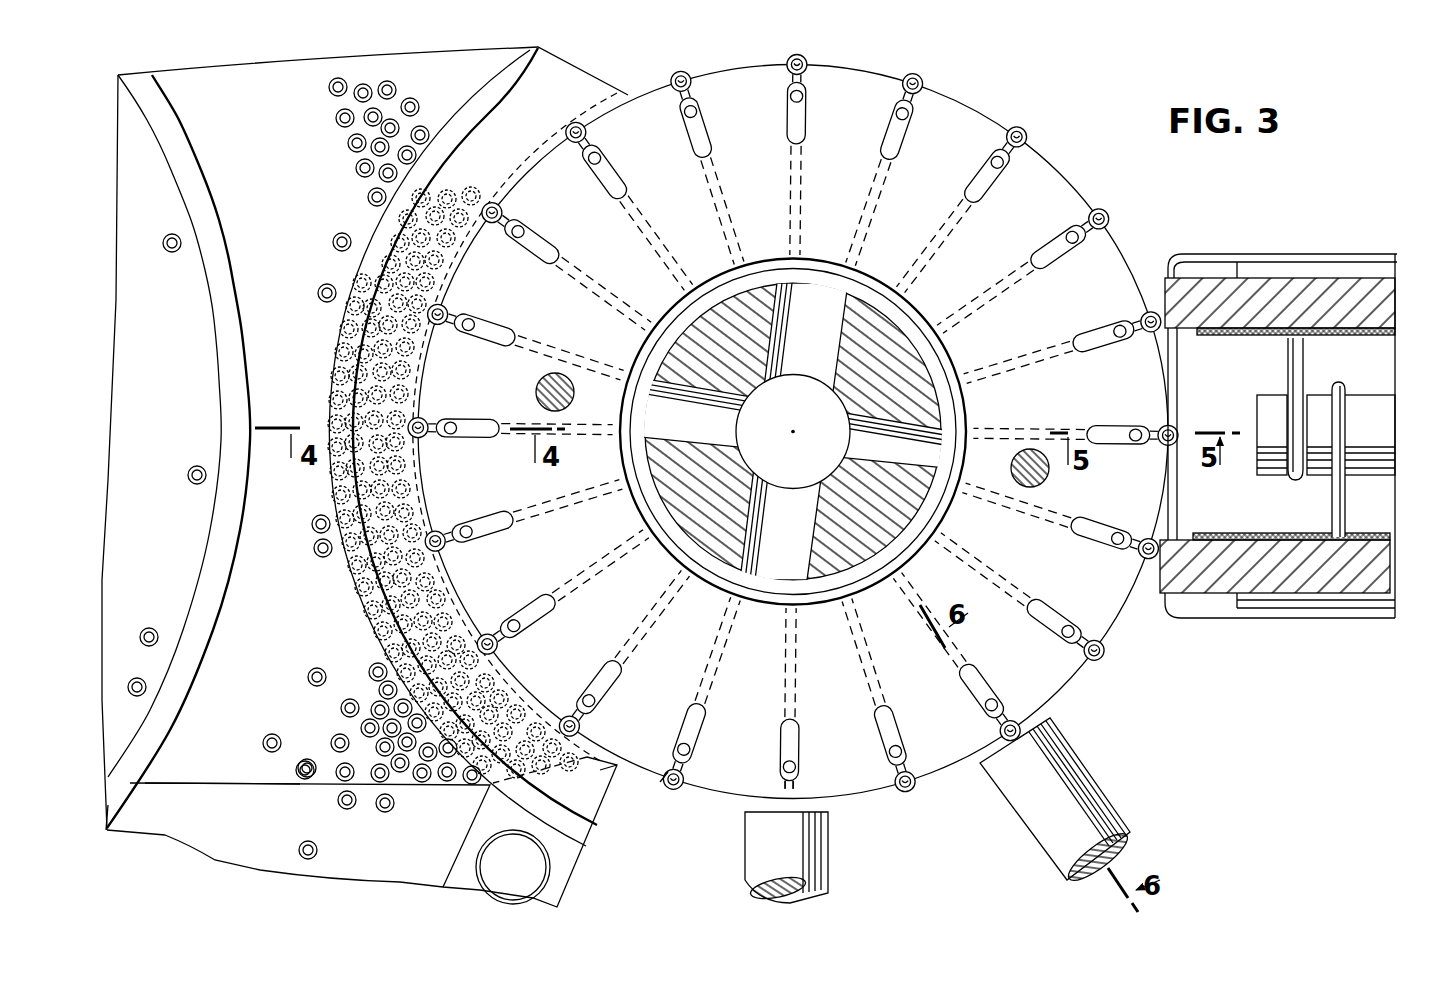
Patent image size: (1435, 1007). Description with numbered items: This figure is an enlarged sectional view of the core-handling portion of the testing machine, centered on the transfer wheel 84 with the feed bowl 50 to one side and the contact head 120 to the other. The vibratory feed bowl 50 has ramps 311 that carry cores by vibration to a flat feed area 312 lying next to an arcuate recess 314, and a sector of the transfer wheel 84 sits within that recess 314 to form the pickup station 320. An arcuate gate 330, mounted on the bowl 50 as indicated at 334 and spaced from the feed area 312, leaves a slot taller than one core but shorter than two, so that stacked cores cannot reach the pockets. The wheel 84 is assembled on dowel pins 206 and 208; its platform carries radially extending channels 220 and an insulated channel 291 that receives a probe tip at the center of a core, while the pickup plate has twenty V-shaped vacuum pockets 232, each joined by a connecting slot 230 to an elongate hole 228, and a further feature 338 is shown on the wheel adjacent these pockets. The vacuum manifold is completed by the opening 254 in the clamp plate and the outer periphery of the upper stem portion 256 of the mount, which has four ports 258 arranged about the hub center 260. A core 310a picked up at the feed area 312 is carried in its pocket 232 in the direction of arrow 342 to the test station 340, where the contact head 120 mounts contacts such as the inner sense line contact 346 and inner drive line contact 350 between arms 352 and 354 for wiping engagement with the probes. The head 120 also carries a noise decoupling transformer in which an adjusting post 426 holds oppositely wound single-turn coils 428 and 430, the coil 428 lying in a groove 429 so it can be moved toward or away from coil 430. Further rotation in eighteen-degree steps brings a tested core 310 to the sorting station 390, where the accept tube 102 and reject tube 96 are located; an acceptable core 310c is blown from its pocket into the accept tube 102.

The feed bowl 50 is at (217, 832).
The transfer wheel 84 is at (729, 802).
The reject tube 96 is at (823, 851).
The accept tube 102 is at (1085, 783).
The contact head 120 is at (1278, 454).
The dowel pin 206 is at (1012, 468).
The dowel pin 208 is at (556, 392).
The channels 220 is at (790, 589).
The elongate hole 228 is at (878, 432).
The connecting slot 230 is at (820, 773).
The vacuum pocket 232 is at (791, 64).
The opening in clamp plate 254 is at (820, 606).
The upper stem portion 256 is at (897, 343).
The ports 258 is at (653, 382).
The hub center 260 is at (835, 400).
The insulated channel 291 is at (666, 786).
The core 310 is at (358, 652).
The core 310a is at (1177, 430).
The core 310c is at (1020, 727).
The ramps 311 is at (172, 825).
The flat feed area 312 is at (258, 701).
The arcuate recess 314 is at (617, 770).
The pickup station 320 is at (427, 420).
The arcuate gate 330 is at (340, 346).
The gate mounting 334 is at (525, 876).
The needle roller 338 is at (793, 431).
The test station 340 is at (1143, 598).
The arrow 342 is at (933, 67).
The inner sense line contact 346 is at (1199, 262).
The inner drive line contact 350 is at (1180, 340).
The arm 352 is at (1262, 580).
The arm 354 is at (1298, 288).
The sorting station 390 is at (947, 800).
The adjusting post 426 is at (1357, 470).
The coil 428 is at (1296, 407).
The groove 429 is at (1292, 482).
The coil 430 is at (1340, 410).